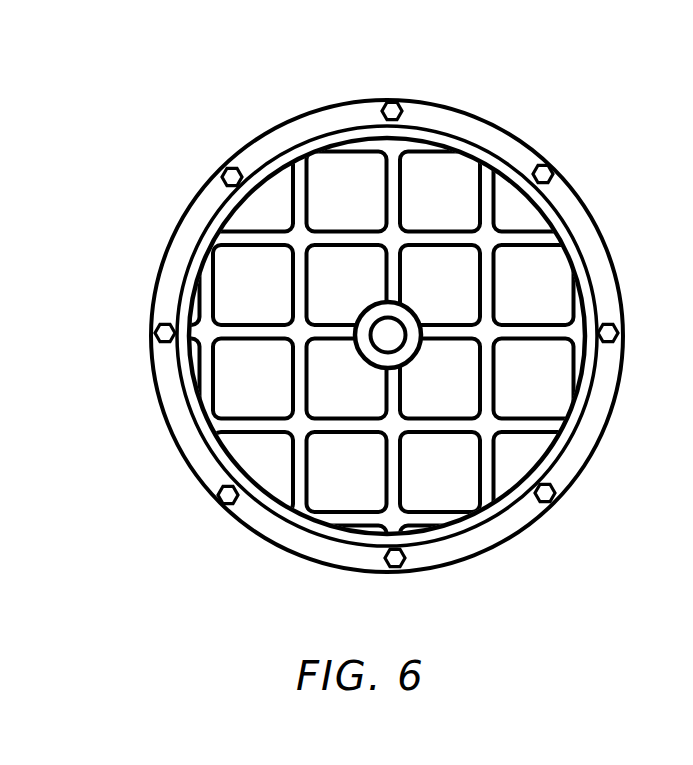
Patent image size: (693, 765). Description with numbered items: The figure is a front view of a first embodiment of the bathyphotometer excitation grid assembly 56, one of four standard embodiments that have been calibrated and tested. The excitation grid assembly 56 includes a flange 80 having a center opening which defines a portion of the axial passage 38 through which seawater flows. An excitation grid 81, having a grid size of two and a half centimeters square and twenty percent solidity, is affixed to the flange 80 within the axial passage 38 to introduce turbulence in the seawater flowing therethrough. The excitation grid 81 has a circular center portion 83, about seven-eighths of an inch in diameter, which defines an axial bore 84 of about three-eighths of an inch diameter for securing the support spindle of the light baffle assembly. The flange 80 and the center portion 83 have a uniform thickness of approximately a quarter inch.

The axial passage 38 is at (265, 173).
The excitation grid assembly 56 is at (144, 424).
The flange 80 is at (604, 170).
The excitation grid 81 is at (402, 190).
The circular center portion 83 is at (410, 321).
The axial bore 84 is at (398, 341).